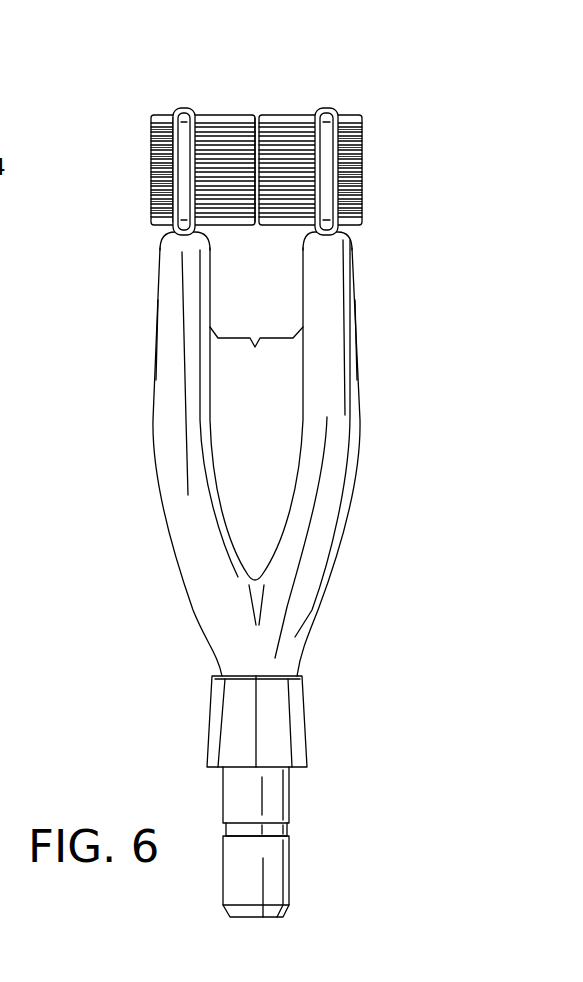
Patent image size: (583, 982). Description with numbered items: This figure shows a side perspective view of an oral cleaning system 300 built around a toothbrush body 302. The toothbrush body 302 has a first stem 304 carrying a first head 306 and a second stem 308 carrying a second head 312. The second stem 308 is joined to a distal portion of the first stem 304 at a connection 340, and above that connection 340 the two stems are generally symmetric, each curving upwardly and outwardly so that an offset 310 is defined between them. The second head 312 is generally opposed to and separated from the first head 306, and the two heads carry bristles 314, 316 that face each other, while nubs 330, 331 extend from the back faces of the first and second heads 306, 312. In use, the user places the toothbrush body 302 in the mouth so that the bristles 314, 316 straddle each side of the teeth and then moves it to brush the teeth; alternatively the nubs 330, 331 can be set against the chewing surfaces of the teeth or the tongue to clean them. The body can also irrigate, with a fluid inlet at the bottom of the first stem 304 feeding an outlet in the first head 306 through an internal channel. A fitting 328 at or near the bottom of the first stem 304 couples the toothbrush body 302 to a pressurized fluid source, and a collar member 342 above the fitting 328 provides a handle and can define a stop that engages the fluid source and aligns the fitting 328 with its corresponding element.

The oral cleaning system 300 is at (118, 428).
The toothbrush body 302 is at (254, 156).
The first stem 304 is at (148, 338).
The first head 306 is at (182, 108).
The second stem 308 is at (366, 391).
The offset 310 is at (256, 353).
The second head 312 is at (328, 108).
The bristles 314 is at (219, 106).
The bristles 316 is at (289, 106).
The fitting 328 is at (289, 829).
The nubs 330 is at (142, 136).
The nubs 331 is at (370, 150).
The connection 340 is at (257, 592).
The collar member 342 is at (210, 703).